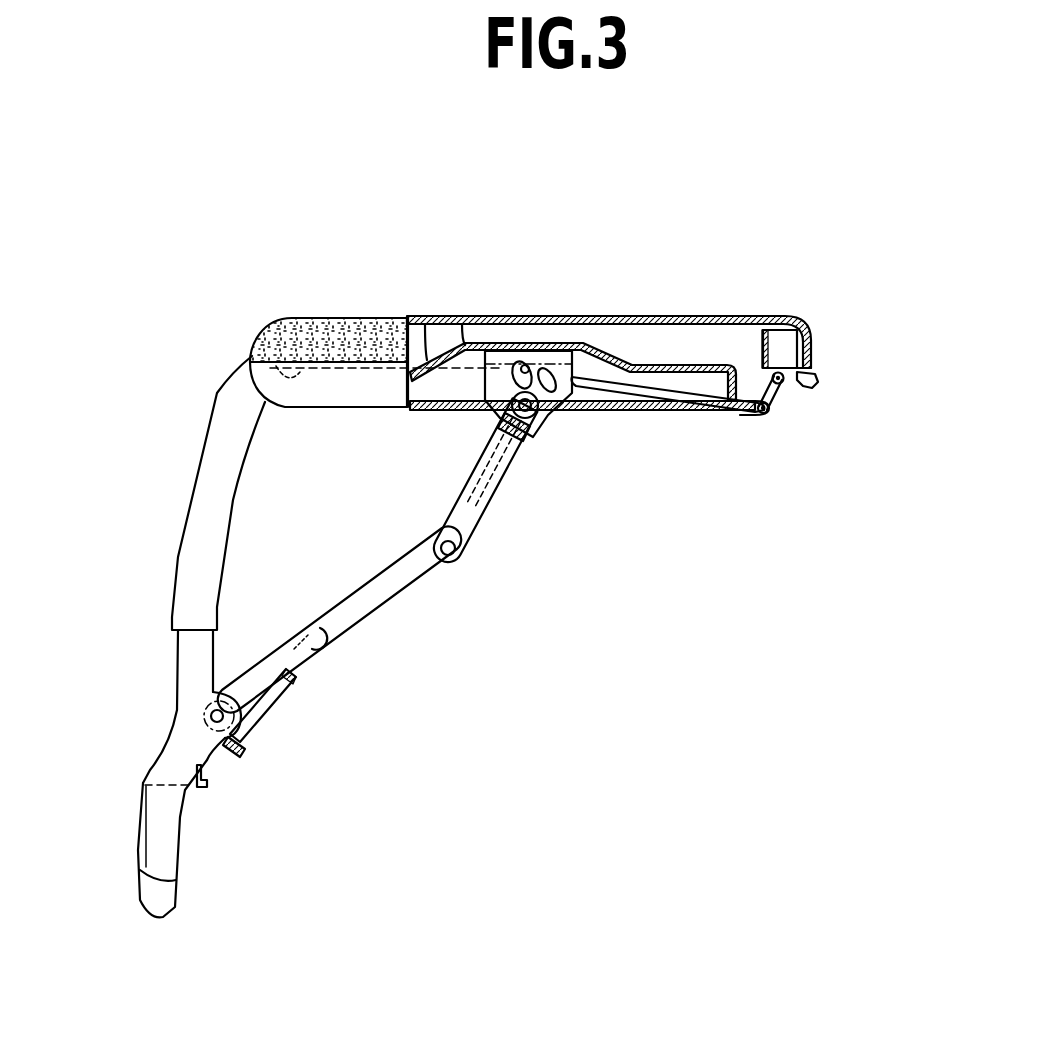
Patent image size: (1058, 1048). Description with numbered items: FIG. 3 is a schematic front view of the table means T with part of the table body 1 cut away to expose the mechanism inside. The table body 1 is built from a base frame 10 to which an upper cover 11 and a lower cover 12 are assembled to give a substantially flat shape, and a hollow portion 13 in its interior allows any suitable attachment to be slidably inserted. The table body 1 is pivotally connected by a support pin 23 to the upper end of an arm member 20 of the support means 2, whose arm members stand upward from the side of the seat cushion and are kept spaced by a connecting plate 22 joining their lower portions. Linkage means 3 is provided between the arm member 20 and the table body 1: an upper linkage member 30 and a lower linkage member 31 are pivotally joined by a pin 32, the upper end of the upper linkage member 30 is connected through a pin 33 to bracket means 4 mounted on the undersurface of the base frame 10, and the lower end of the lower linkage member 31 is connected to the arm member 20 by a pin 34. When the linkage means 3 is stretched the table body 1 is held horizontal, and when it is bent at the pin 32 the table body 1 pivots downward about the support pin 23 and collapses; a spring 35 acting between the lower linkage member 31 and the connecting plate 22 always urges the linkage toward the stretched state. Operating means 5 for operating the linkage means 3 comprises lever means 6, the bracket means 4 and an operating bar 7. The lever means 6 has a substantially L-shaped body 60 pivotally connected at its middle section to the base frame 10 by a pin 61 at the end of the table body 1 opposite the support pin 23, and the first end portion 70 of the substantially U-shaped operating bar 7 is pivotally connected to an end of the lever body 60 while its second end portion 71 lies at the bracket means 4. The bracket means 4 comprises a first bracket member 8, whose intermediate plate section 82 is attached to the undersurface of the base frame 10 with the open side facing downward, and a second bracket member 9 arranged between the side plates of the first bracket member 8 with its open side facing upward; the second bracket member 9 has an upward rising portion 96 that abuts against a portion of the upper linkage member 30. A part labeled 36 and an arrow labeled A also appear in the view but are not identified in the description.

The table body 1 is at (357, 318).
The support means 2 is at (179, 505).
The linkage means 3 is at (370, 602).
The bracket means 4 is at (481, 385).
The operating means 5 is at (617, 401).
The lever means 6 is at (812, 383).
The operating bar 7 is at (665, 398).
The first bracket member 8 is at (463, 316).
The second bracket member 9 is at (548, 418).
The base frame 10 is at (585, 350).
The upper cover 11 is at (703, 316).
The lower cover 12 is at (700, 411).
The hollow portion 13 is at (733, 340).
The arm member 20 is at (178, 658).
The connecting plate 22 is at (140, 833).
The support pin 23 is at (303, 317).
The upper linkage member 30 is at (483, 513).
The lower linkage member 31 is at (330, 587).
The pin 32 is at (452, 560).
The pin 33 is at (510, 390).
The pin 34 is at (212, 716).
The spring 35 is at (265, 722).
The bottom plate 36 is at (440, 407).
The body 60 is at (772, 393).
The pin 61 is at (781, 384).
The first end portion 70 is at (765, 415).
The second end portion 71 is at (526, 360).
The intermediate plate section 82 is at (554, 364).
The upward rising portion 96 is at (528, 427).
The table means T is at (492, 307).
The direction A is at (494, 603).